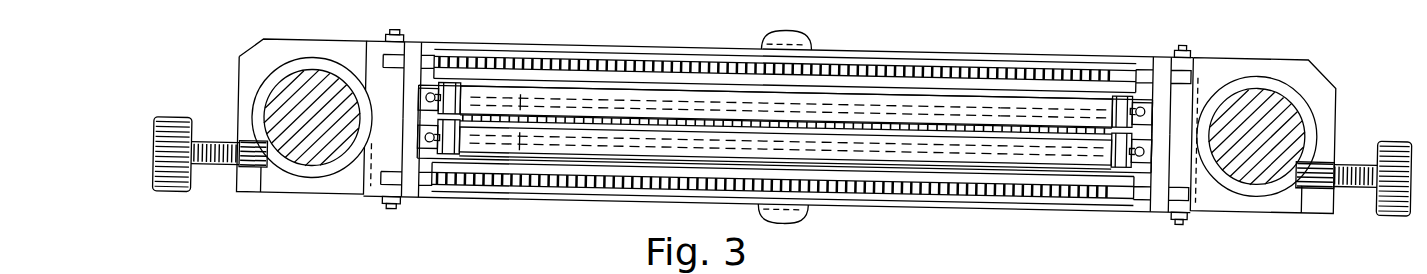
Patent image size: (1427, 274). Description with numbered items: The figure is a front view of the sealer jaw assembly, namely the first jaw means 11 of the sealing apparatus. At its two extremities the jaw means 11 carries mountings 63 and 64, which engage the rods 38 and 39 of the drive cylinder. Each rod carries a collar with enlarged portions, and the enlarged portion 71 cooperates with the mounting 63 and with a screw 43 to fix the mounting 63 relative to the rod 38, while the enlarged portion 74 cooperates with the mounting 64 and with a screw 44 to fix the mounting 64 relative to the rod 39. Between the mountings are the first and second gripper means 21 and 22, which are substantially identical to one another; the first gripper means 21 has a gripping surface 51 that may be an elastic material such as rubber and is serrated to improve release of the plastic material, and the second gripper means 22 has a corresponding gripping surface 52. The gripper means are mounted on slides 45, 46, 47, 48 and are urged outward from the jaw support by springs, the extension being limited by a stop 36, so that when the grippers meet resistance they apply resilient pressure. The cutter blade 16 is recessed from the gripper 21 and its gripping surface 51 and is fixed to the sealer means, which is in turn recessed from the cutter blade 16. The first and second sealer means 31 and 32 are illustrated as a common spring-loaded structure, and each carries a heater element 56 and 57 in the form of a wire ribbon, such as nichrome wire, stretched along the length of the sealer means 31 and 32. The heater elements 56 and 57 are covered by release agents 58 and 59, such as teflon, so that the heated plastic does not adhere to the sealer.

The first jaw means 11 is at (798, 15).
The cutter blade 16 is at (745, 122).
The first gripper means 21 is at (838, 53).
The second gripper means 22 is at (935, 205).
The first sealer means 31 is at (977, 100).
The second sealer means 32 is at (858, 157).
The stop 36 is at (808, 33).
The rod 38 is at (310, 167).
The rod 39 is at (1257, 187).
The screw 43 is at (184, 195).
The screw 44 is at (1390, 143).
The slide 45 is at (427, 40).
The slide 46 is at (1135, 58).
The slide 47 is at (432, 188).
The slide 48 is at (1138, 198).
The gripping surface 51 is at (913, 67).
The gripping surface 52 is at (993, 188).
The heater element 56 is at (1063, 108).
The heater element 57 is at (1035, 150).
The release agent 58 is at (675, 98).
The release agent 59 is at (603, 147).
The mounting 63 is at (237, 80).
The mounting 64 is at (1257, 57).
The enlarged portion 71 is at (324, 176).
The enlarged portion 74 is at (1280, 190).